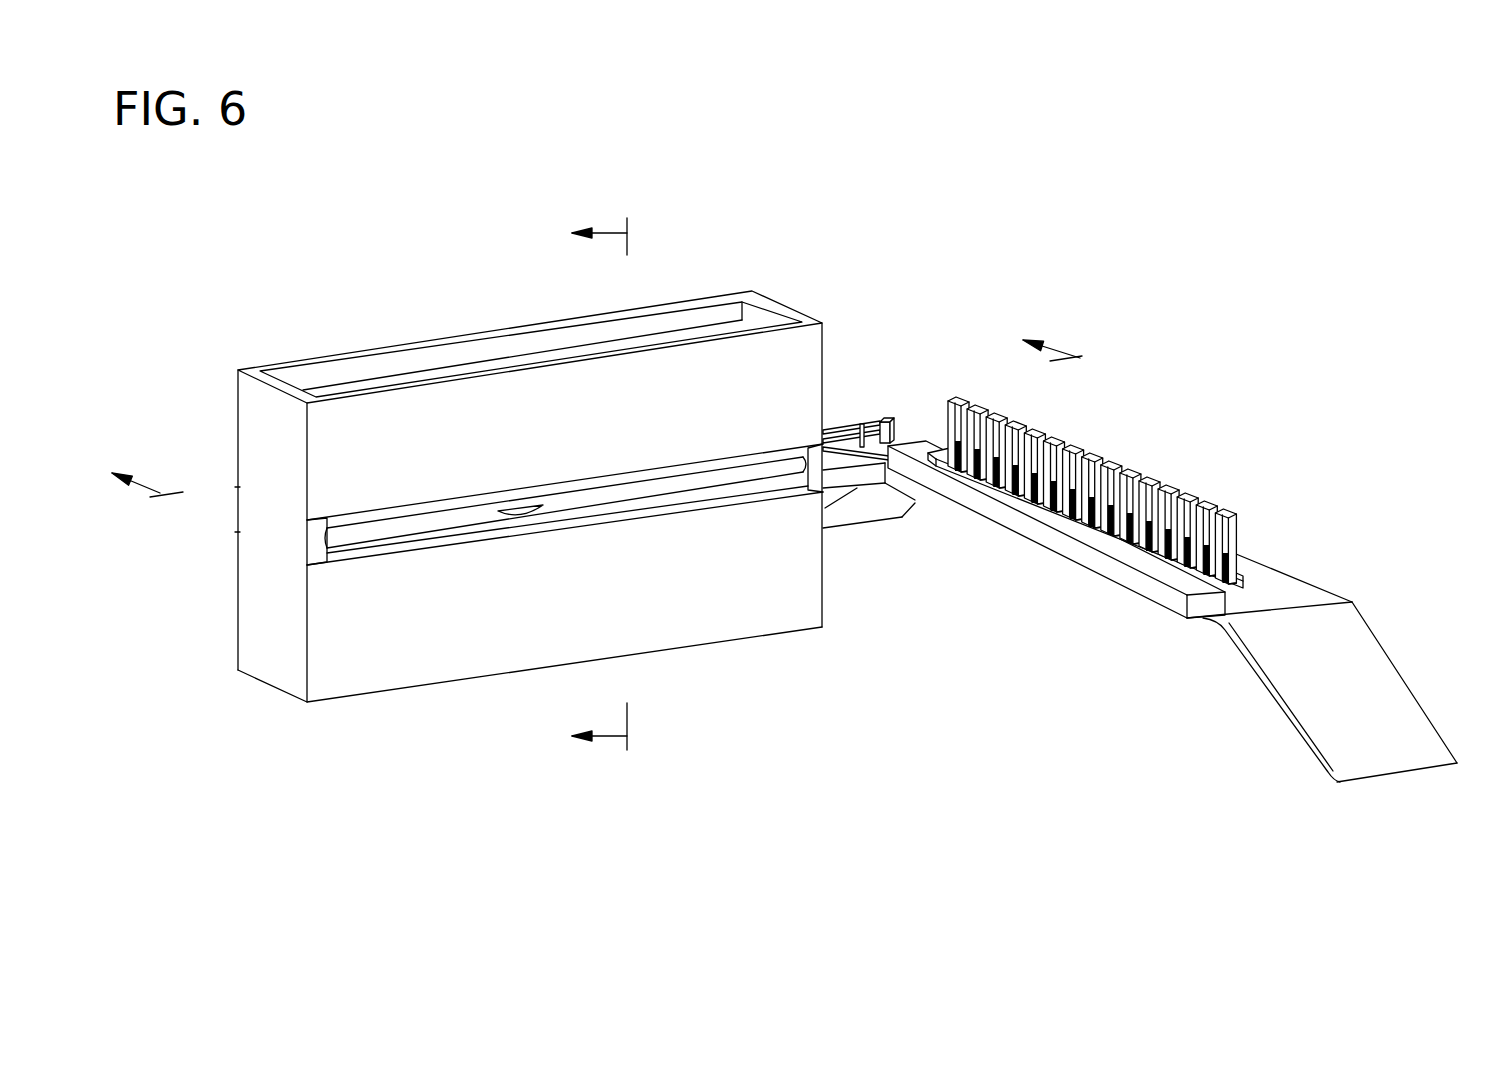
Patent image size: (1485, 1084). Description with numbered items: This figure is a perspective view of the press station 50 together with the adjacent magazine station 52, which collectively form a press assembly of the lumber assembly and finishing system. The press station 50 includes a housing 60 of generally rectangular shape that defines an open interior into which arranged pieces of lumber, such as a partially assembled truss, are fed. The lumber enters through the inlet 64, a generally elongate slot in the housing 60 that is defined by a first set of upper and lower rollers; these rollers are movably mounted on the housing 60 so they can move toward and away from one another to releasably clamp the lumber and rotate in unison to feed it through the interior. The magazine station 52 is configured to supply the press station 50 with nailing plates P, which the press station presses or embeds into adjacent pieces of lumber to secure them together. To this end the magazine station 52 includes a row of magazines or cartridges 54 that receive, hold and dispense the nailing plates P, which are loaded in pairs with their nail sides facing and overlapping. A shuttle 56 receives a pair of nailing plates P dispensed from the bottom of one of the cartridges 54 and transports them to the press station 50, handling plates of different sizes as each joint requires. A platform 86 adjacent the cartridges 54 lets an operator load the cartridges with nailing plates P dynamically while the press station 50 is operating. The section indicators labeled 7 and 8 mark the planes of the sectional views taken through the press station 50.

The press station 50 is at (760, 280).
The magazine station 52 is at (1255, 468).
The cartridges 54 is at (998, 411).
The shuttle 56 is at (1020, 532).
The housing 60 is at (805, 363).
The inlet 64 is at (398, 536).
The platform 86 is at (1303, 592).
The nailing plates P is at (1228, 565).
The section line 7 is at (611, 439).
The section line 8 is at (612, 476).